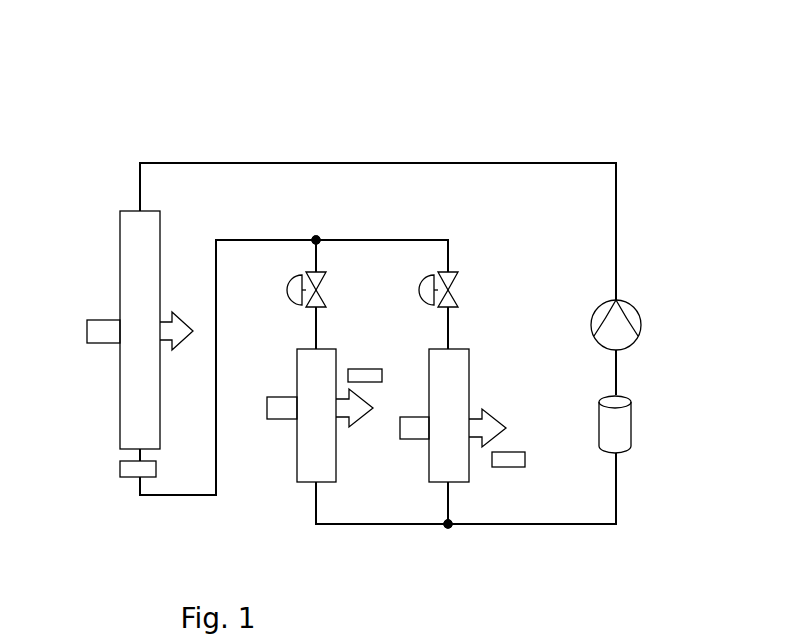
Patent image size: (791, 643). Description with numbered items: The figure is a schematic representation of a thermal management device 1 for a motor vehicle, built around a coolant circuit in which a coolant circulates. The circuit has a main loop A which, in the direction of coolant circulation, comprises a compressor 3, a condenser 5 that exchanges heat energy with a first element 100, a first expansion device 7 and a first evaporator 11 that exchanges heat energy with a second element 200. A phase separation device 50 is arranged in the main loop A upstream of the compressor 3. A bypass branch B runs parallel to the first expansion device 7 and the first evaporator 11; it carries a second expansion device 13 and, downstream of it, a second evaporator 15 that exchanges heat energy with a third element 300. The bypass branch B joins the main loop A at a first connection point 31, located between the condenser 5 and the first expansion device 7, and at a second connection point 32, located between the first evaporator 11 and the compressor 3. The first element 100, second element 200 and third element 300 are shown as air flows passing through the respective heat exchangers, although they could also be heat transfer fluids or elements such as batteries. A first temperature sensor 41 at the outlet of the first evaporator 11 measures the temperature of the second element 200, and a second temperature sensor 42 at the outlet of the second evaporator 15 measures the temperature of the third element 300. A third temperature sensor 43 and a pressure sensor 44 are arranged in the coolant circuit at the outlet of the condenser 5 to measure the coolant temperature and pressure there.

The thermal management device 1 is at (156, 92).
The compressor 3 is at (637, 337).
The condenser 5 is at (156, 330).
The first expansion device 7 is at (297, 274).
The first evaporator 11 is at (335, 415).
The second expansion device 13 is at (428, 273).
The second evaporator 15 is at (467, 415).
The first connection point 31 is at (316, 237).
The second connection point 32 is at (450, 527).
The first temperature sensor 41 is at (363, 368).
The second temperature sensor 42 is at (505, 467).
The third temperature sensor 43 is at (107, 519).
The pressure sensor 44 is at (128, 477).
The phase separation device 50 is at (631, 438).
The first element 100 is at (106, 326).
The second element 200 is at (281, 420).
The third element 300 is at (490, 410).
The main loop A is at (640, 209).
The bypass branch B is at (441, 214).